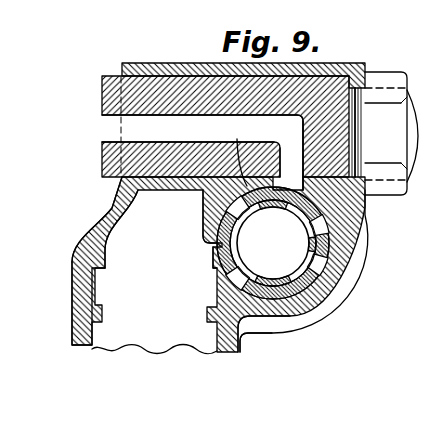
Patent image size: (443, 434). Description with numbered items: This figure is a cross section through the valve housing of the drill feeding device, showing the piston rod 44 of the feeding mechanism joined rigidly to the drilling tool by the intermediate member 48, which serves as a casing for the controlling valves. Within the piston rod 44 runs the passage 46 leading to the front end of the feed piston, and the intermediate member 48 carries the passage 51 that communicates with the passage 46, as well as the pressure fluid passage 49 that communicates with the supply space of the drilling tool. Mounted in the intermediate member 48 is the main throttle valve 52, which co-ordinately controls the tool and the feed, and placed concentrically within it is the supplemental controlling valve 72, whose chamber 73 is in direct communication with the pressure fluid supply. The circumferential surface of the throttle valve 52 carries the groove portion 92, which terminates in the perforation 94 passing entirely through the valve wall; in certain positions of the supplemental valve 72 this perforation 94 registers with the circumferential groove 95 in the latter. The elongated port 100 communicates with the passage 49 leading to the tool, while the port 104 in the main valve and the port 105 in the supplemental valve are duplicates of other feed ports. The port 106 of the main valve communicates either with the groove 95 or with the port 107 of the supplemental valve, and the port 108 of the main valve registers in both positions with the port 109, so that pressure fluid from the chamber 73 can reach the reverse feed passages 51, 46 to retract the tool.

The piston rod 44 is at (110, 160).
The passage 46 is at (110, 120).
The intermediate member 48 is at (72, 294).
The pressure fluid passage 49 is at (143, 215).
The passage 51 is at (293, 183).
The throttle valve 52 is at (355, 280).
The supplemental controlling valve 72 is at (307, 247).
The chamber 73 is at (330, 264).
The circumferential portion of groove 92 is at (271, 192).
The perforation 94 is at (237, 152).
The circumferential groove 95 is at (260, 200).
The port 100 is at (213, 252).
The port 104 is at (267, 283).
The port 105 is at (300, 259).
The port 106 is at (213, 202).
The port 107 is at (238, 248).
The port 108 is at (315, 212).
The port 109 is at (325, 232).